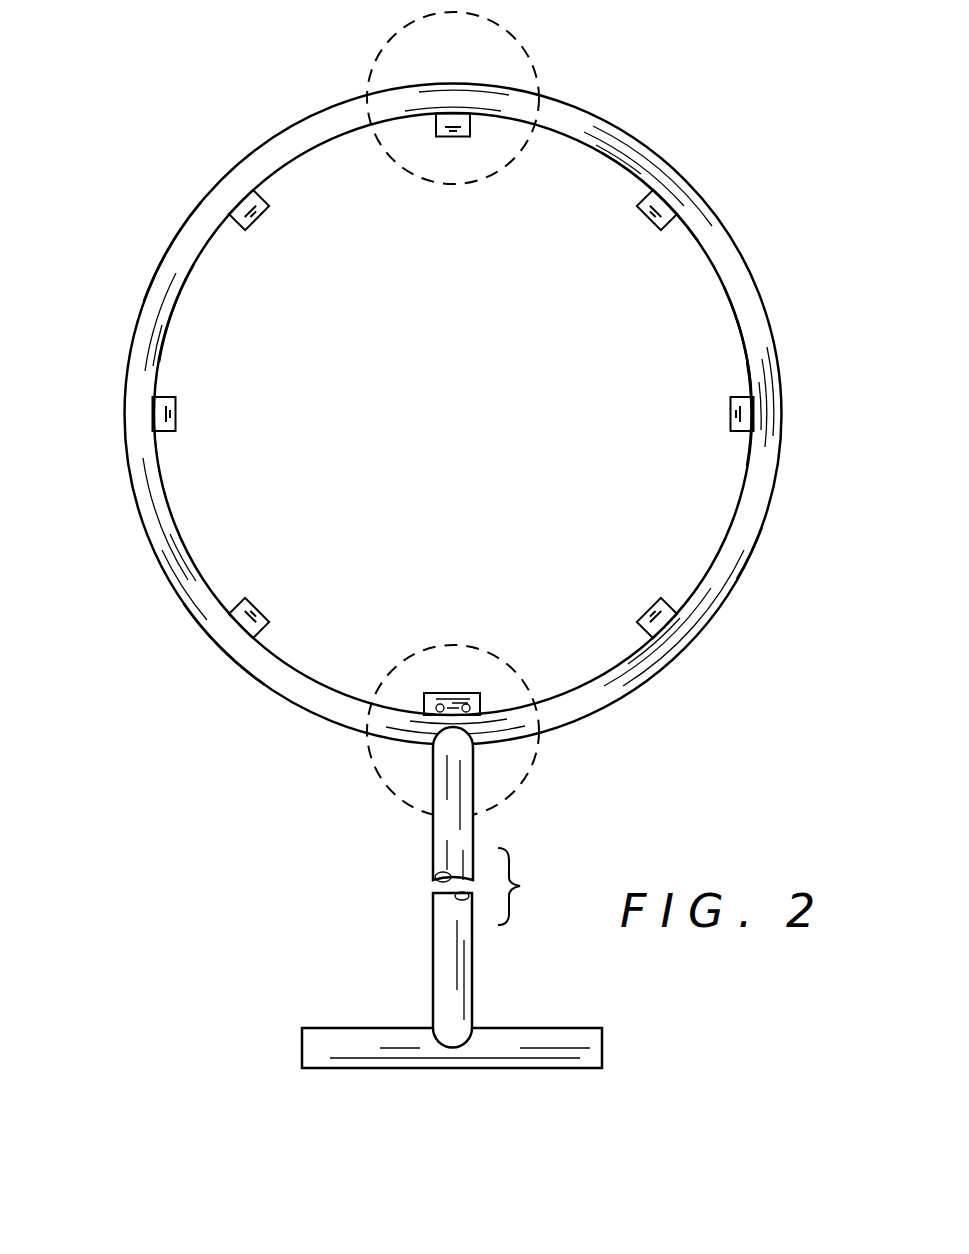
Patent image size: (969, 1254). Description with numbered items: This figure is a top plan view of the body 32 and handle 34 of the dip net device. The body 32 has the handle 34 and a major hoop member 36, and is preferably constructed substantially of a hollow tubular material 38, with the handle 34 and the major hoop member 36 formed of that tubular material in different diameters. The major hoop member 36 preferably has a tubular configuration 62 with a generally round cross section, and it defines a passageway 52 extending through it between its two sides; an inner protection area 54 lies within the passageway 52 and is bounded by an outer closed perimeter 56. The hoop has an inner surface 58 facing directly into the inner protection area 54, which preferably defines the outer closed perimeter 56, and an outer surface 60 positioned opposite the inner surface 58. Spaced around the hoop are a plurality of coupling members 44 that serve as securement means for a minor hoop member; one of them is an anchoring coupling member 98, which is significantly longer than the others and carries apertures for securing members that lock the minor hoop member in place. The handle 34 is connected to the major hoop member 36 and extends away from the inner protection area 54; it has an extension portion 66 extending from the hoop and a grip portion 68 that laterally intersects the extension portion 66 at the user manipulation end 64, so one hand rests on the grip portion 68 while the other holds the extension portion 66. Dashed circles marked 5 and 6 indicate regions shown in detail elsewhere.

The body 32 is at (806, 633).
The major hoop member 36 is at (755, 551).
The outer surface 60 is at (166, 262).
The tubular configuration 62 is at (258, 682).
The inner surface 58 is at (178, 295).
The passageway 52 is at (578, 303).
The inner protection area 54 is at (736, 368).
The outer closed perimeter 56 is at (746, 494).
The detail region of FIG. 5 is at (378, 54).
The detail region of FIG. 6 is at (527, 777).
The coupling members 44 is at (446, 135).
The anchoring coupling member 98 is at (475, 693).
The grip portion 68 is at (376, 1068).
The handle 34 is at (433, 968).
The hollow tubular material 38 is at (433, 915).
The user manipulation end 64 is at (472, 958).
The extension portion 66 is at (433, 852).